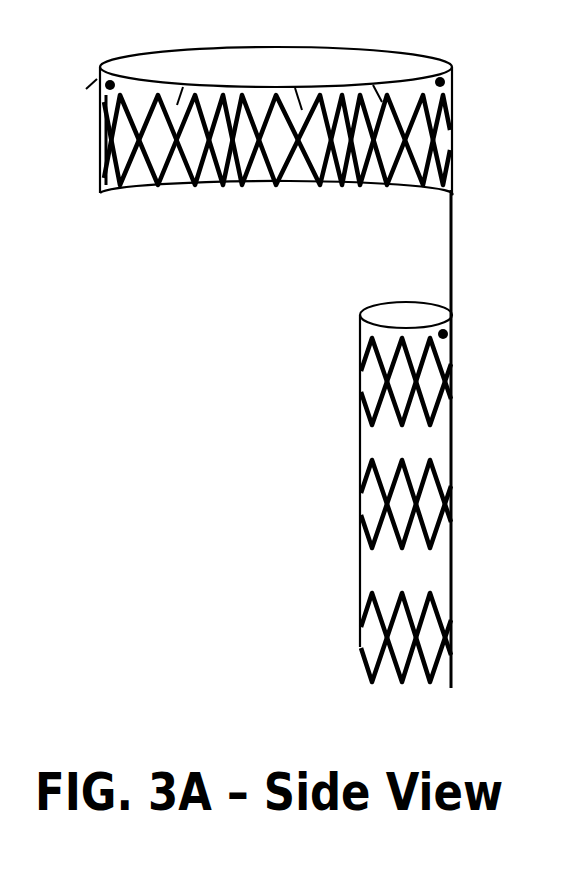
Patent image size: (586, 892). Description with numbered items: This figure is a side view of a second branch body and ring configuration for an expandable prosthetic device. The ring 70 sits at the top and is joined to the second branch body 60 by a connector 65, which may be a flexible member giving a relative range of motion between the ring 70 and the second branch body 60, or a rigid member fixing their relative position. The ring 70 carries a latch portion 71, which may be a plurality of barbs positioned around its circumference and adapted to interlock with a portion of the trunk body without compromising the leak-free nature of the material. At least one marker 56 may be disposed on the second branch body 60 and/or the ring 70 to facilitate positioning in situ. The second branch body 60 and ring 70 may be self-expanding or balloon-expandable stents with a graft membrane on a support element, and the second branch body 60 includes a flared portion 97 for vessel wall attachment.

The ring 70 is at (453, 150).
The second branch body 60 is at (408, 492).
The connector 65 is at (451, 250).
The marker 56 is at (447, 77).
The latch portion 71 is at (100, 77).
The flared portion 97 is at (370, 673).